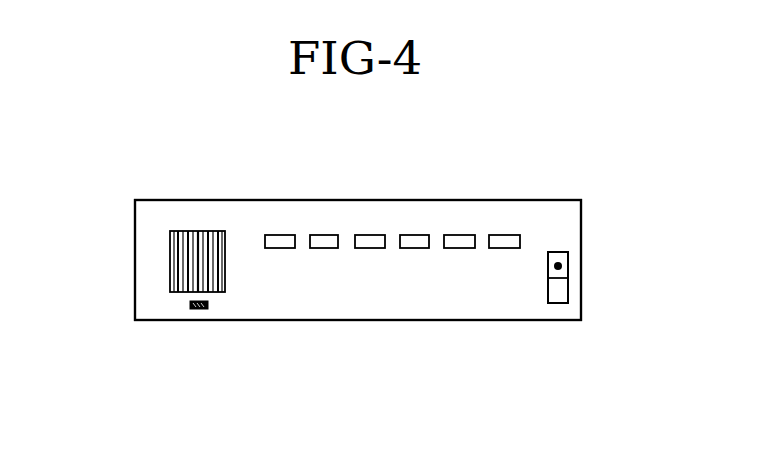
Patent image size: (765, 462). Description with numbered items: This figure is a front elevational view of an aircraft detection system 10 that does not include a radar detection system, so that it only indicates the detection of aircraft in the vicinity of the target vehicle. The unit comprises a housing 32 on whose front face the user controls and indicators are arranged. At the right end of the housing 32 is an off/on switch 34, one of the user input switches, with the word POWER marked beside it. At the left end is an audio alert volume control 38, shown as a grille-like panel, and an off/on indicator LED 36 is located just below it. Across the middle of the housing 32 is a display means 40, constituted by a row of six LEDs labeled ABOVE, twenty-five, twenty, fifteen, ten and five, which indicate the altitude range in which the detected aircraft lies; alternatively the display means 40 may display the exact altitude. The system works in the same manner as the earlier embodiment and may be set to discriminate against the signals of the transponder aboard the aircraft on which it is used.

The measuring instrument 10 is at (150, 181).
The housing 32 is at (446, 198).
The off/on switch 34 is at (568, 292).
The off/on indicator LED 36 is at (197, 313).
The audio alert volume control 38 is at (172, 260).
The display means 40 is at (327, 213).